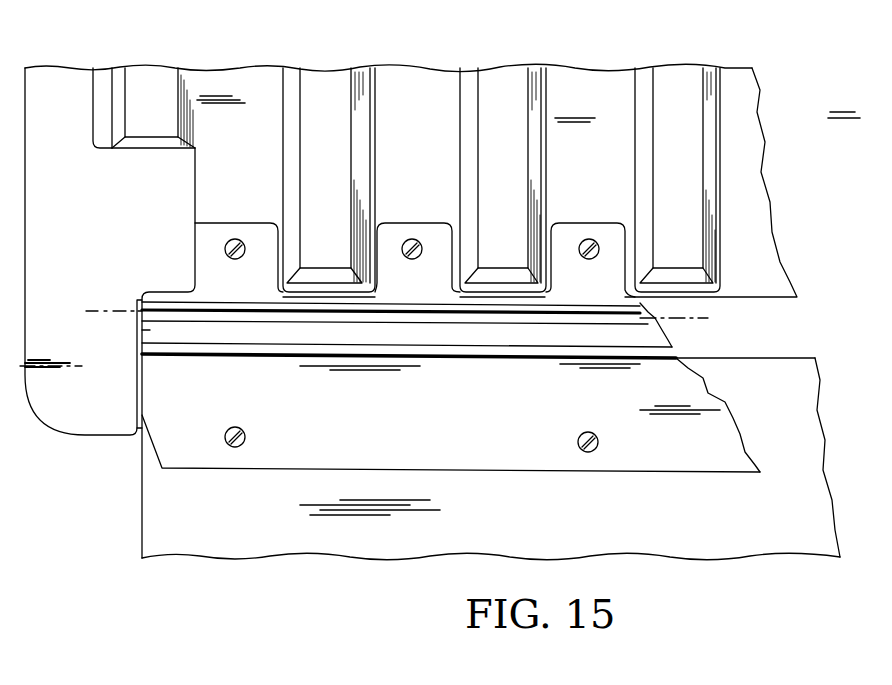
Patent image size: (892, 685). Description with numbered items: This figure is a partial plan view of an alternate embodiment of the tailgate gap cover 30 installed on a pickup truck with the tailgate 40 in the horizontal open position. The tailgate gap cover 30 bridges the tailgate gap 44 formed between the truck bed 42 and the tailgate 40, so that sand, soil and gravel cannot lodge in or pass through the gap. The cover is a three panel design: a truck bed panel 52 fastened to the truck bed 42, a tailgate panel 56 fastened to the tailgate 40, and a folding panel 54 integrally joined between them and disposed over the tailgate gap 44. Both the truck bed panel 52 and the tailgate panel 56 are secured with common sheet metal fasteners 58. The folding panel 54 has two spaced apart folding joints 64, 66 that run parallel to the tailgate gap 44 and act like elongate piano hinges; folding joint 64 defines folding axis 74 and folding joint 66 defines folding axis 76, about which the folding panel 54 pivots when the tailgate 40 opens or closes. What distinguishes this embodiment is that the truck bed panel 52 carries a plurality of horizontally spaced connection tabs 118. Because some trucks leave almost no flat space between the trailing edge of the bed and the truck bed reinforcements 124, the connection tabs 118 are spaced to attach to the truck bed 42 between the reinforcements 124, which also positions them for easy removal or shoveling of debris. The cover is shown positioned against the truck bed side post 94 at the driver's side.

The tailgate gap cover 30 is at (157, 428).
The tailgate 40 is at (228, 559).
The truck bed 42 is at (430, 78).
The tailgate gap 44 is at (770, 333).
The truck bed panel 52 is at (173, 256).
The folding panel 54 is at (150, 330).
The tailgate panel 56 is at (508, 473).
The sheet metal fasteners 58 is at (414, 259).
The folding joint 64 is at (565, 302).
The folding joint 66 is at (384, 360).
The folding axis 74 is at (108, 310).
The folding axis 76 is at (121, 350).
The truck bed side post 94 is at (198, 172).
The connection tabs 118 is at (248, 223).
The truck bed reinforcements 124 is at (170, 80).